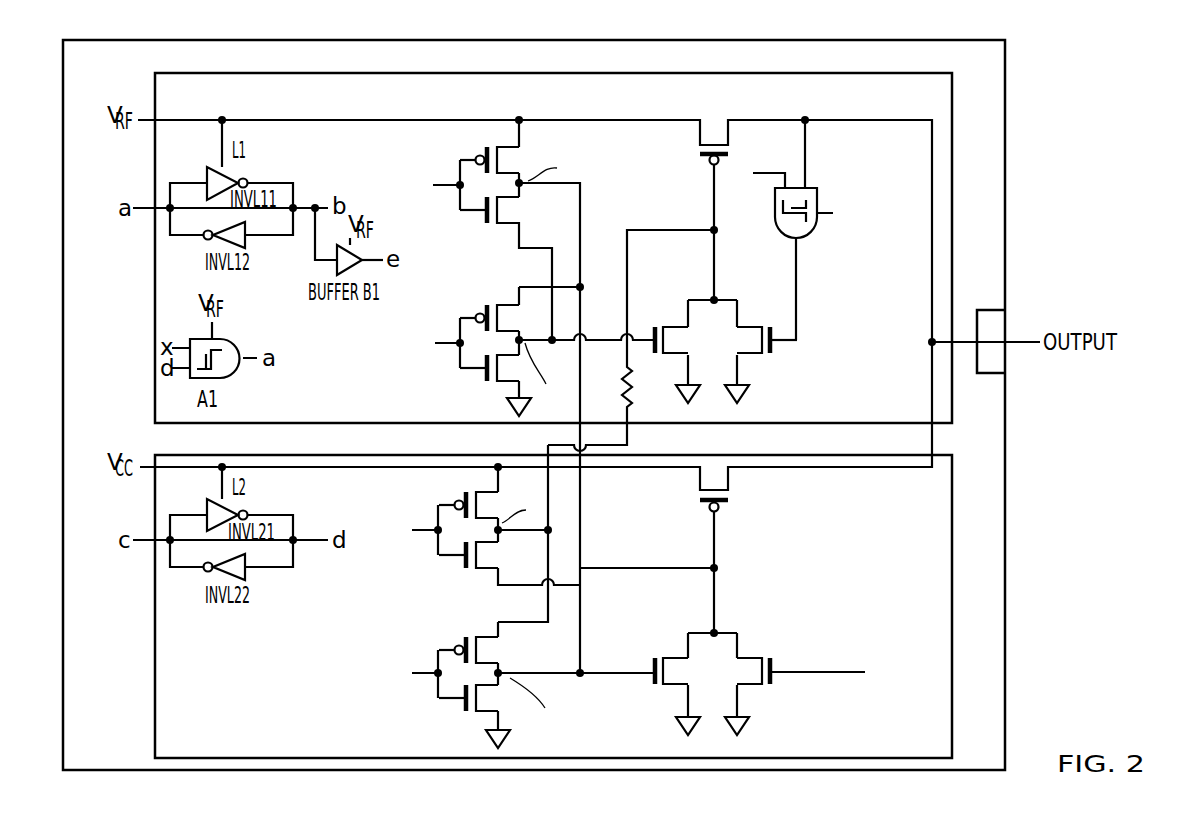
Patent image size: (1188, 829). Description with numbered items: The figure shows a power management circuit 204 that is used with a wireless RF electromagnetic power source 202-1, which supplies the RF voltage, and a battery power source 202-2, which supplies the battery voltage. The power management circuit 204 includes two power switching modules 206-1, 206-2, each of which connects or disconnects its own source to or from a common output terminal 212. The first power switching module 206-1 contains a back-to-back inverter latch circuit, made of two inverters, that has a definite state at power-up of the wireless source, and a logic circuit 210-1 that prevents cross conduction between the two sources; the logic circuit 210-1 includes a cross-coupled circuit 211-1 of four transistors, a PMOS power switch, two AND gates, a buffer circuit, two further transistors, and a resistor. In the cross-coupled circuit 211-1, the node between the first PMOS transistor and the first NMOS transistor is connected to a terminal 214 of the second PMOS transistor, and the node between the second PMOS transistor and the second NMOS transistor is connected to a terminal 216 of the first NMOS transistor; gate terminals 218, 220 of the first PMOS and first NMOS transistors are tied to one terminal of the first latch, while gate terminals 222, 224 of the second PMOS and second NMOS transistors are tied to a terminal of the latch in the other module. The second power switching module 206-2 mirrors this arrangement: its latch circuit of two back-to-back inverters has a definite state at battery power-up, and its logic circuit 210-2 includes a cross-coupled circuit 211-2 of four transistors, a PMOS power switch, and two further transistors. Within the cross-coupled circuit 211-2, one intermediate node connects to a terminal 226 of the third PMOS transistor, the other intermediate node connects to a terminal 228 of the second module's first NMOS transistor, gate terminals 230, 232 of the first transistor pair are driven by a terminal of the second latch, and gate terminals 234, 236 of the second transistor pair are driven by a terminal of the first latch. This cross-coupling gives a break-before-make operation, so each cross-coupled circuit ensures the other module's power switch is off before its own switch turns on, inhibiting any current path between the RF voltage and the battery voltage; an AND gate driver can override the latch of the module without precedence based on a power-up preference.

The power management circuit 204 is at (1005, 80).
The wireless RF electromagnetic power source 202-1 is at (128, 90).
The battery power source 202-2 is at (128, 439).
The power switching module 206-1 is at (952, 173).
The power switching module 206-2 is at (952, 547).
The logic circuit 210-1 is at (665, 186).
The logic circuit 210-2 is at (665, 533).
The cross-coupled circuit 211-1 is at (533, 278).
The cross-coupled circuit 211-2 is at (512, 615).
The output terminal 212 is at (996, 326).
The terminal of PMOS transistor M3 214 is at (512, 300).
The terminal of NMOS transistor M2 216 is at (512, 229).
The gate terminal of PMOS transistor M1 218 is at (476, 160).
The gate terminal of NMOS transistor M2 220 is at (459, 200).
The gate terminal of PMOS transistor M3 222 is at (437, 340).
The gate terminal of NMOS transistor M4 224 is at (476, 370).
The terminal of PMOS transistor M7 226 is at (490, 624).
The terminal of NMOS transistor M6 228 is at (490, 578).
The gate terminal of PMOS transistor M5 230 is at (437, 517).
The gate terminal of NMOS transistor M6 232 is at (437, 555).
The gate terminal of PMOS transistor M7 234 is at (437, 657).
The gate terminal of NMOS transistor M8 236 is at (437, 697).